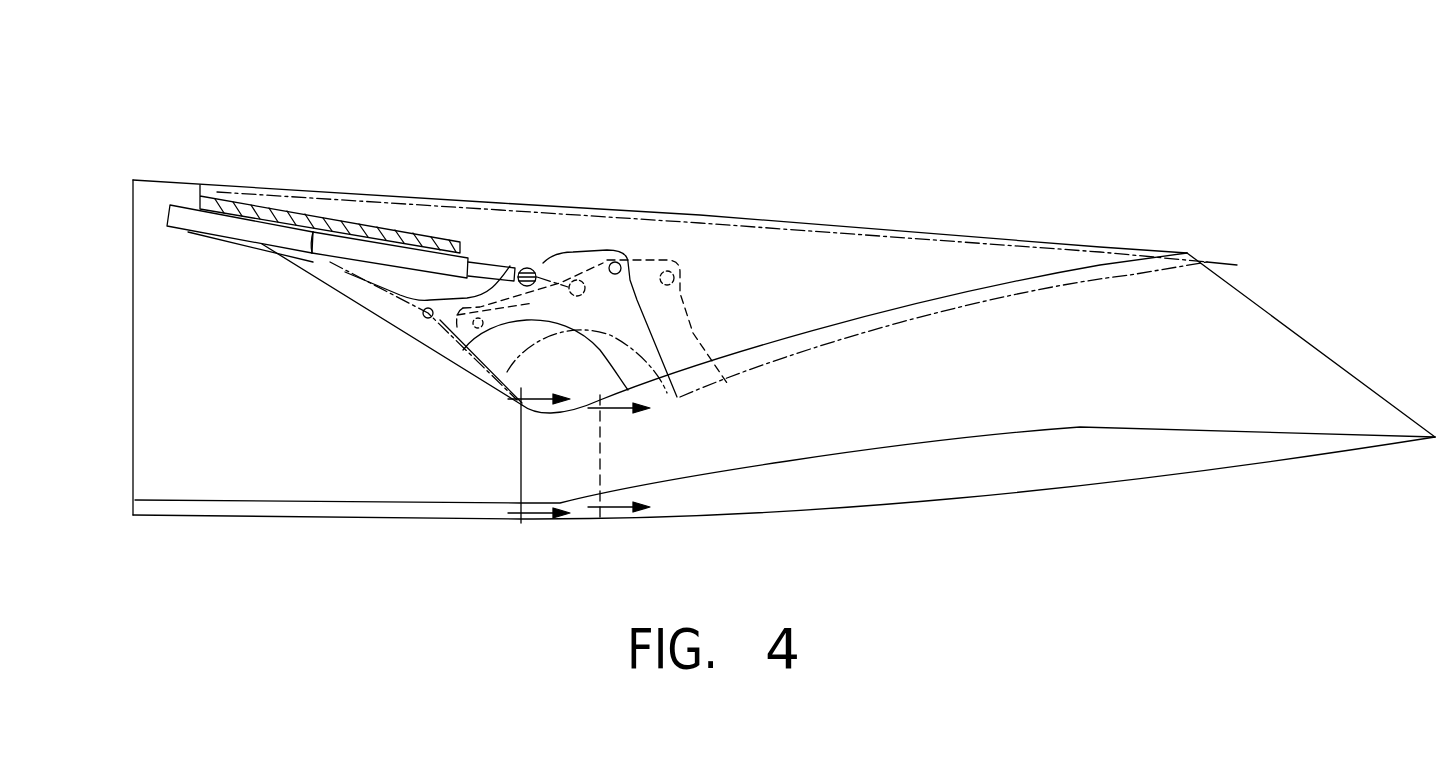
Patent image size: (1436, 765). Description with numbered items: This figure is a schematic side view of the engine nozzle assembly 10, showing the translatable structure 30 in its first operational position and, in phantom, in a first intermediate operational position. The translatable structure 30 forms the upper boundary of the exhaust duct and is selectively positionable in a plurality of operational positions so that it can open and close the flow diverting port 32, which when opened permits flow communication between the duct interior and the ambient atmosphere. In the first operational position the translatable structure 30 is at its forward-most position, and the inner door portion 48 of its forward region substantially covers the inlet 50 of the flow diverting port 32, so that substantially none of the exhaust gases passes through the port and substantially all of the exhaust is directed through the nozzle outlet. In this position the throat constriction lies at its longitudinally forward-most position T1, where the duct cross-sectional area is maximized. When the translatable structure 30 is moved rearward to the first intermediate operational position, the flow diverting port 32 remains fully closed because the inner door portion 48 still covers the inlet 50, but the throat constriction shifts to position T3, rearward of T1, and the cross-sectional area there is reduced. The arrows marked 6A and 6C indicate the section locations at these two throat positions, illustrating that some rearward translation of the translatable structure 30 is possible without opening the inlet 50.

The engine nozzle assembly 10 is at (1172, 52).
The translatable structure 30 is at (1088, 246).
The flow diverting port 32 is at (375, 228).
The inner door portion 48 is at (243, 241).
The inlet 50 is at (313, 253).
The section line 6A is at (546, 460).
The section line 6C is at (649, 457).
The forward-most position of the throat constriction T1 is at (521, 458).
The throat constriction position in first intermediate operational position T3 is at (597, 453).